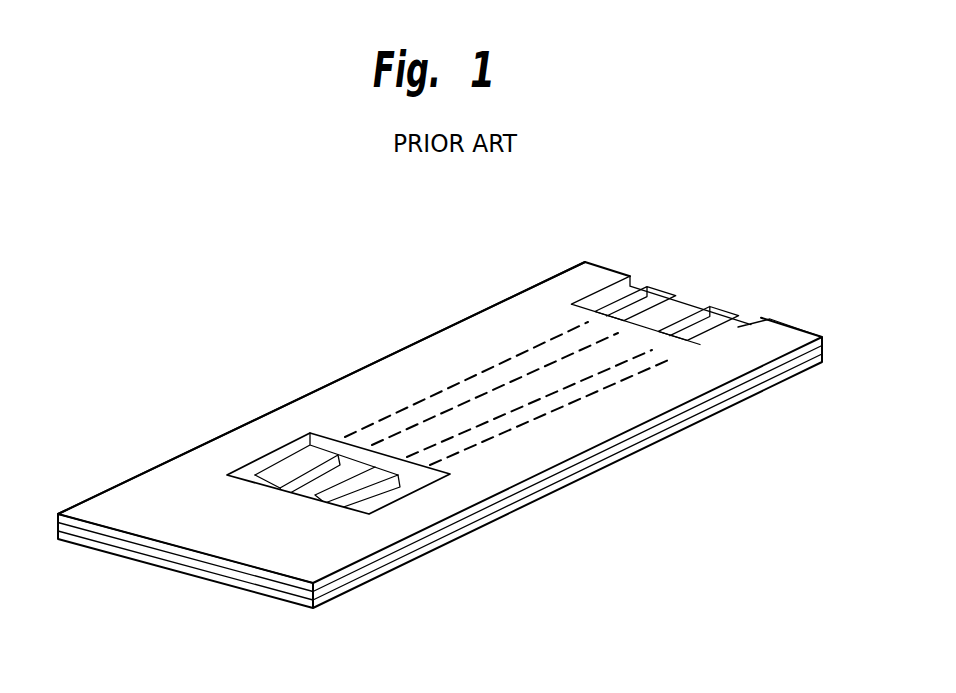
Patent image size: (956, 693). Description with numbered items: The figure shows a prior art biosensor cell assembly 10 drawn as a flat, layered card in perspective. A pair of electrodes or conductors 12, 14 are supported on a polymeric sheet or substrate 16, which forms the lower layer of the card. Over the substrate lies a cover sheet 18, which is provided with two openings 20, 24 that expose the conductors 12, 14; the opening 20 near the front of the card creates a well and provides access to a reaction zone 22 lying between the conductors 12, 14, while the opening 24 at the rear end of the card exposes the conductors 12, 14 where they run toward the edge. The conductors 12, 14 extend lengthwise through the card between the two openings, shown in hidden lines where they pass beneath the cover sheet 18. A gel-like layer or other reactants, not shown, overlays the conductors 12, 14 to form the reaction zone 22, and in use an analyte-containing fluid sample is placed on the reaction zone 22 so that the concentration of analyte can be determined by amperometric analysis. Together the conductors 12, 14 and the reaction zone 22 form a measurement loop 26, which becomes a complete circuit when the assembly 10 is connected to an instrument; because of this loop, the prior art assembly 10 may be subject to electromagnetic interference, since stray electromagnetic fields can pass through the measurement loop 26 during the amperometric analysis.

The biosensor cell assembly 10 is at (278, 388).
The electrode or conductor 12 is at (285, 463).
The electrode or conductor 14 is at (376, 488).
The polymeric sheet or substrate 16 is at (386, 575).
The cover sheet 18 is at (306, 554).
The opening 20 is at (357, 472).
The reaction zone 22 is at (300, 487).
The opening 24 is at (740, 326).
The measurement loop 26 is at (471, 300).